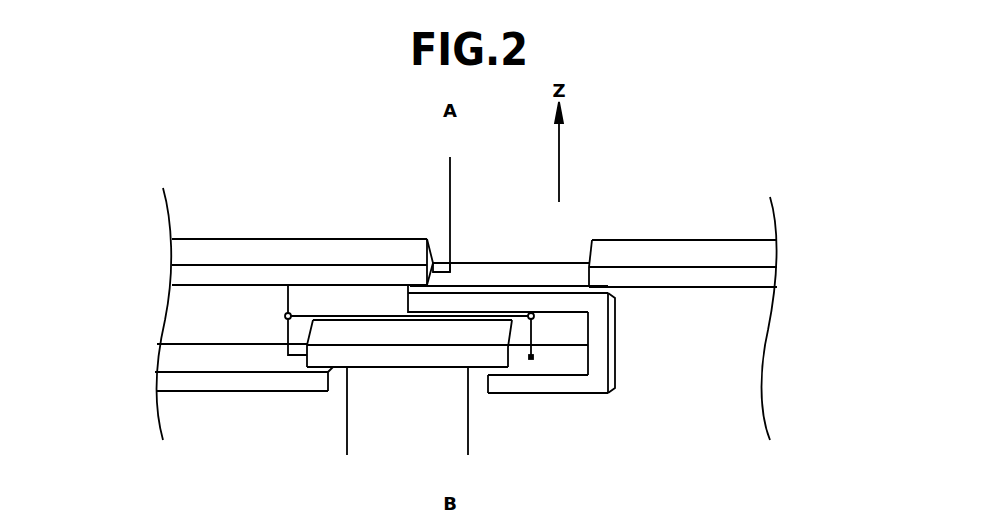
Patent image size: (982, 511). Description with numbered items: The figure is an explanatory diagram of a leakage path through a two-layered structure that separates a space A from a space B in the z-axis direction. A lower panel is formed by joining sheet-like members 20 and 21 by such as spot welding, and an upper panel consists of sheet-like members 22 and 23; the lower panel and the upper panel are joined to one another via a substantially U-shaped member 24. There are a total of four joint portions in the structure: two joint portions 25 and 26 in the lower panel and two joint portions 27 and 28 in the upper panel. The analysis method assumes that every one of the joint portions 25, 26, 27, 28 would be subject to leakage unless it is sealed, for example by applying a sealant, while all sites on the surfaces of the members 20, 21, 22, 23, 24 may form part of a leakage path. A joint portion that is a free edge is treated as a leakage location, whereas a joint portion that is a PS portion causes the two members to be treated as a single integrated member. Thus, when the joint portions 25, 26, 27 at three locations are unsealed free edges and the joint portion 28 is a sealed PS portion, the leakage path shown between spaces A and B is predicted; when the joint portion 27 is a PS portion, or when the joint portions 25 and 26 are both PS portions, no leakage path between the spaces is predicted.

The sheet-like member 20 is at (222, 392).
The sheet-like member 21 is at (398, 372).
The sheet-like member 22 is at (248, 237).
The sheet-like member 23 is at (713, 240).
The substantially U-shaped member 24 is at (520, 263).
The joint portion 25 is at (335, 370).
The joint portion 26 is at (482, 370).
The joint portion 27 is at (435, 266).
The joint portion 28 is at (583, 272).